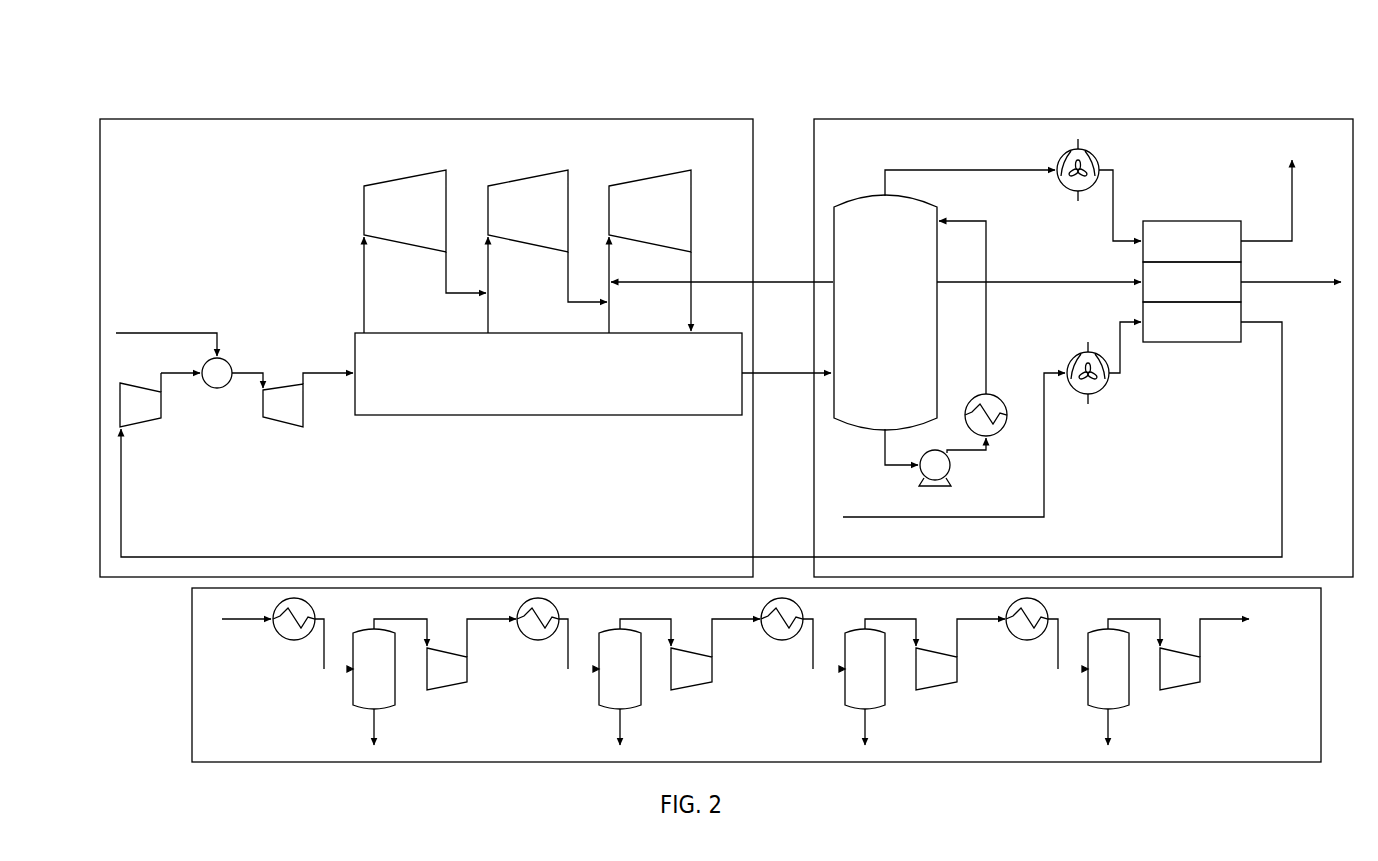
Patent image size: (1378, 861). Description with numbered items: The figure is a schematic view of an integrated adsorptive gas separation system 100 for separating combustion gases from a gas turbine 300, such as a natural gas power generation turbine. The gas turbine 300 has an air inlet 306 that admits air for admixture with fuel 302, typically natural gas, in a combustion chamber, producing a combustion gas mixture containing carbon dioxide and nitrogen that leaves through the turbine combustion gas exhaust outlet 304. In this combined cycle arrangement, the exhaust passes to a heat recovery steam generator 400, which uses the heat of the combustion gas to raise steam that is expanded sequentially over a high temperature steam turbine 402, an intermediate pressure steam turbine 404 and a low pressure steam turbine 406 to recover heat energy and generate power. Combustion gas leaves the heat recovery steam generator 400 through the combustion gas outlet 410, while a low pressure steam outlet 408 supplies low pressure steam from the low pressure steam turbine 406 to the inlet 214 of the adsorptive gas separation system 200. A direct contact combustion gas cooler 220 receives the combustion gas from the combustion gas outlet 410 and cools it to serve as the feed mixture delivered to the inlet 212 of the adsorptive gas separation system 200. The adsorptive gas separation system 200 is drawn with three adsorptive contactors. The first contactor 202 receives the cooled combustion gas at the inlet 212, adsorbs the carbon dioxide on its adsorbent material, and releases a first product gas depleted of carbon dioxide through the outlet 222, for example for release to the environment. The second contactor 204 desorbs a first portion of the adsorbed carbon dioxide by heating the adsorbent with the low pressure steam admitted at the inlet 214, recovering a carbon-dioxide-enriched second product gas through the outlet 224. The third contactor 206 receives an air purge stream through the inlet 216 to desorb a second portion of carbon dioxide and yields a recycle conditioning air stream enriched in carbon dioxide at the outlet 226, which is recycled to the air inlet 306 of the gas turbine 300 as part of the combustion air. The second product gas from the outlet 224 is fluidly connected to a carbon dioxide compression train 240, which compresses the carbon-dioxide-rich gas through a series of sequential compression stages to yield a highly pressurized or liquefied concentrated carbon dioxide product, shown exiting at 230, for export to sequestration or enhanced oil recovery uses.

The integrated adsorptive gas separation system 100 is at (776, 72).
The adsorptive gas separation system 200 is at (1175, 165).
The first contactor 202 is at (1192, 241).
The second contactor 204 is at (1192, 282).
The third contactor 206 is at (1192, 322).
The inlet 212 is at (1100, 190).
The inlet 214 is at (1039, 270).
The inlet 216 is at (992, 414).
The combustion gas cooler 220 is at (944, 328).
The outlet 222 is at (1274, 185).
The outlet 224 is at (781, 439).
The outlet 226 is at (724, 439).
The outlet stream 230 is at (790, 671).
The carbon dioxide compression train 240 is at (968, 766).
The gas turbine 300 is at (232, 397).
The fuel 302 is at (166, 333).
The turbine combustion gas exhaust outlet 304 is at (328, 366).
The air inlet 306 is at (140, 413).
The heat recovery steam generator 400 is at (590, 420).
The high temperature steam turbine 402 is at (425, 238).
The intermediate pressure steam turbine 404 is at (547, 238).
The low pressure steam turbine 406 is at (650, 238).
The low pressure steam outlet 408 is at (722, 270).
The combustion gas outlet 410 is at (786, 362).